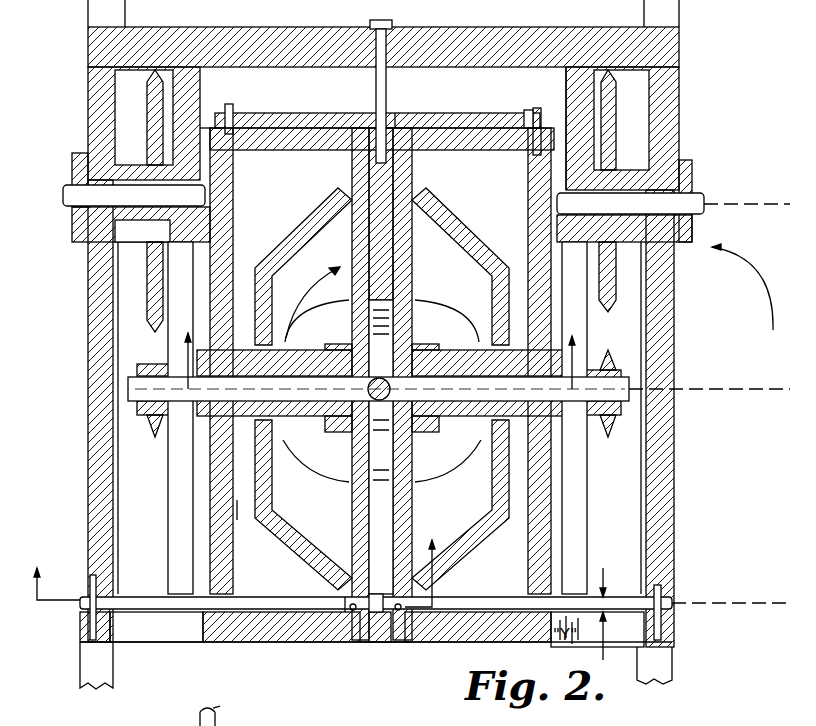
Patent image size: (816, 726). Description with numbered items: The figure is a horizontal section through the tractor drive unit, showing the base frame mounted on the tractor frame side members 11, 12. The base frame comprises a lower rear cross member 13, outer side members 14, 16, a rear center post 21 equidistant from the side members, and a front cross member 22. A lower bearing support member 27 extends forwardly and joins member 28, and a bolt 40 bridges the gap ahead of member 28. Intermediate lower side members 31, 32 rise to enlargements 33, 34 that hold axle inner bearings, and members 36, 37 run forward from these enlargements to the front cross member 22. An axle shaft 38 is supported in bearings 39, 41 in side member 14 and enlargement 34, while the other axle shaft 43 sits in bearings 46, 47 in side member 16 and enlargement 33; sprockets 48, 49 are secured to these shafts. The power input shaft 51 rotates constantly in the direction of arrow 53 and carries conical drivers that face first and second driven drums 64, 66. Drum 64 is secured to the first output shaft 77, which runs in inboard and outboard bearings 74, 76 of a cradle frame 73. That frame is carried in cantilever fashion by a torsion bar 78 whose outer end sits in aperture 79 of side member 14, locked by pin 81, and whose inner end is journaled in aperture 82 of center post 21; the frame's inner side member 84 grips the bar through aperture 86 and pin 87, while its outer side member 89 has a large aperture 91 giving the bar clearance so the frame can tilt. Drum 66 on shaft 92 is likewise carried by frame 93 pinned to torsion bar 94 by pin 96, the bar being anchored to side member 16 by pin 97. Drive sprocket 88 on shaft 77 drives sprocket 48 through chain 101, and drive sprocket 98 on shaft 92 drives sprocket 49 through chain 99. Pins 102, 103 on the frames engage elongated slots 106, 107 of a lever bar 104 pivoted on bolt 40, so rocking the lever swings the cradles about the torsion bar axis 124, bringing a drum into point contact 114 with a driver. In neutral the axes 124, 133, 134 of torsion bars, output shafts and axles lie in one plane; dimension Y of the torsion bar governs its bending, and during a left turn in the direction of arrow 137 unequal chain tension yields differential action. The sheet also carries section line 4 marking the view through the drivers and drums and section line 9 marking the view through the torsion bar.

The tractor frame side member 11 is at (672, 24).
The tractor frame side member 12 is at (95, 12).
The lower rear cross member 13 is at (170, 636).
The side member 14 is at (86, 480).
The side member 16 is at (674, 496).
The rear center post 21 is at (385, 660).
The front cross member 22 is at (262, 28).
The lower bearing support member 27 is at (386, 525).
The member 28 is at (384, 180).
The intermediate lower side member 31 is at (586, 492).
The intermediate lower side member 32 is at (168, 500).
The enlargement 33 is at (530, 184).
The enlargement 34 is at (234, 166).
The member 36 is at (202, 82).
The member 37 is at (566, 86).
The axle shaft 38 is at (66, 184).
The bearing 39 is at (72, 226).
The bolt 40 is at (394, 24).
The bearing 41 is at (205, 220).
The axle shaft 43 is at (702, 196).
The bearing 46 is at (690, 170).
The bearing 47 is at (531, 222).
The driven sprocket 48 is at (150, 112).
The sprocket 49 is at (616, 116).
The power input shaft 51 is at (228, 720).
The arrow 53 is at (313, 302).
The first driven member 64 is at (333, 206).
The second driven member 66 is at (439, 210).
The frame 73 is at (303, 505).
The inboard bearing 74 is at (328, 358).
The outboard bearing 76 is at (226, 358).
The first output shaft 77 is at (302, 432).
The torsion bar 78 is at (156, 597).
The aperture 79 is at (84, 594).
The pin 81 is at (76, 622).
The aperture 82 is at (376, 642).
The inner side member 84 is at (350, 606).
The aperture 86 is at (345, 616).
The pin 87 is at (367, 584).
The drive sprocket 88 is at (142, 420).
The outer side member 89 is at (238, 512).
The aperture 91 is at (238, 600).
The shaft 92 is at (452, 376).
The frame 93 is at (521, 537).
The torsion bar 94 is at (492, 604).
The pin 96 is at (398, 611).
The pin 97 is at (674, 598).
The drive sprocket 98 is at (612, 366).
The chain 99 is at (612, 318).
The chain 101 is at (147, 322).
The pin 102 is at (234, 108).
The pin 103 is at (538, 108).
The lever bar 104 is at (404, 118).
The elongated slot 106 is at (262, 116).
The elongated slot 107 is at (528, 110).
The point contact 114 is at (180, 717).
The axis 124 is at (748, 603).
The rotational axis 133 is at (736, 389).
The rotational axis 134 is at (768, 204).
The arrow 137 is at (760, 288).
The section line 4 is at (380, 348).
The section line 9 is at (234, 559).